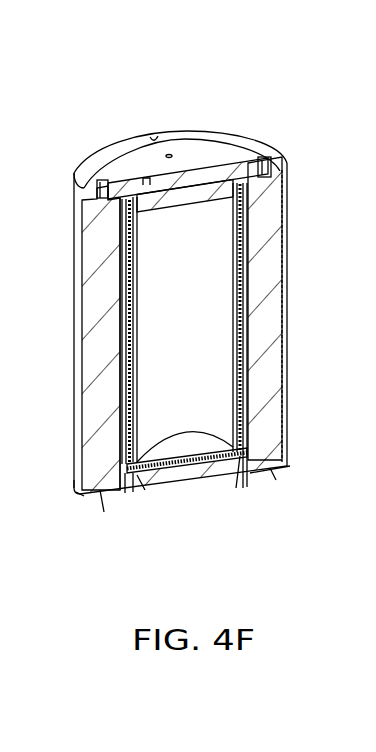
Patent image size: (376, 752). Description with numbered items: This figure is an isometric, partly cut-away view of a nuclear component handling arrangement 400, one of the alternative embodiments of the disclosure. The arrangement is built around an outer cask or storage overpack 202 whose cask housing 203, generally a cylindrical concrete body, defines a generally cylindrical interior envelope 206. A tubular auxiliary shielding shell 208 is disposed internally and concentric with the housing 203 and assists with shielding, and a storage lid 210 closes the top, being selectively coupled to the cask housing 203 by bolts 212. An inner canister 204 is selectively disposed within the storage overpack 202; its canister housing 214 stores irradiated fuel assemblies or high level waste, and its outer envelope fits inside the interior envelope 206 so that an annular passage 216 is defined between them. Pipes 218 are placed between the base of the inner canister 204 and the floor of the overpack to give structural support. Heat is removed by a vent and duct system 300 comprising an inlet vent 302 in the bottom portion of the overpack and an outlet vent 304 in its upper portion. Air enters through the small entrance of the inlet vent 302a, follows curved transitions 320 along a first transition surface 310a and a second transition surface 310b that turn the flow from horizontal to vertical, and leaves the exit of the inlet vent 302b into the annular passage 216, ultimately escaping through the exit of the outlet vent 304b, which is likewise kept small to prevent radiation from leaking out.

The nuclear component handling arrangement 400 is at (190, 87).
The outer cask 202 is at (375, 104).
The cask housing 203 is at (72, 200).
The inner canister 204 is at (207, 312).
The interior envelope 206 is at (120, 321).
The auxiliary shielding shell 208 is at (242, 250).
The storage lid 210 is at (122, 163).
The bolts 212 is at (153, 133).
The canister housing 214 is at (133, 395).
The annular passage 216 is at (116, 409).
The pipes 218 is at (188, 487).
The vent and duct system 300 is at (95, 480).
The inlet vent 302 is at (75, 511).
The entrance of inlet vent 302a is at (74, 498).
The exit of inlet vent 302b is at (136, 489).
The outlet vent 304 is at (375, 137).
The exit of outlet vent 304b is at (188, 316).
The first transition surface 310a is at (126, 495).
The second transition surface 310b is at (134, 497).
The curved transitions 320 is at (98, 519).